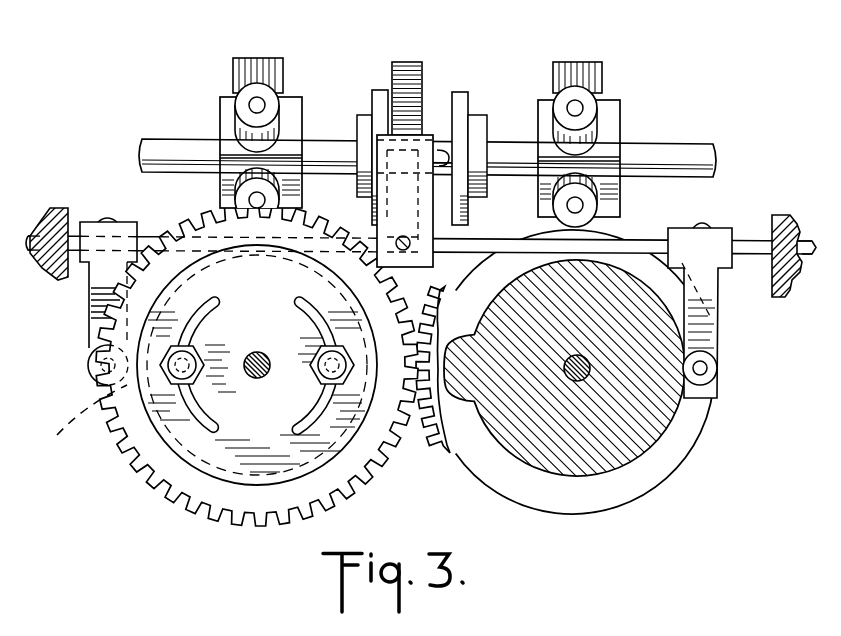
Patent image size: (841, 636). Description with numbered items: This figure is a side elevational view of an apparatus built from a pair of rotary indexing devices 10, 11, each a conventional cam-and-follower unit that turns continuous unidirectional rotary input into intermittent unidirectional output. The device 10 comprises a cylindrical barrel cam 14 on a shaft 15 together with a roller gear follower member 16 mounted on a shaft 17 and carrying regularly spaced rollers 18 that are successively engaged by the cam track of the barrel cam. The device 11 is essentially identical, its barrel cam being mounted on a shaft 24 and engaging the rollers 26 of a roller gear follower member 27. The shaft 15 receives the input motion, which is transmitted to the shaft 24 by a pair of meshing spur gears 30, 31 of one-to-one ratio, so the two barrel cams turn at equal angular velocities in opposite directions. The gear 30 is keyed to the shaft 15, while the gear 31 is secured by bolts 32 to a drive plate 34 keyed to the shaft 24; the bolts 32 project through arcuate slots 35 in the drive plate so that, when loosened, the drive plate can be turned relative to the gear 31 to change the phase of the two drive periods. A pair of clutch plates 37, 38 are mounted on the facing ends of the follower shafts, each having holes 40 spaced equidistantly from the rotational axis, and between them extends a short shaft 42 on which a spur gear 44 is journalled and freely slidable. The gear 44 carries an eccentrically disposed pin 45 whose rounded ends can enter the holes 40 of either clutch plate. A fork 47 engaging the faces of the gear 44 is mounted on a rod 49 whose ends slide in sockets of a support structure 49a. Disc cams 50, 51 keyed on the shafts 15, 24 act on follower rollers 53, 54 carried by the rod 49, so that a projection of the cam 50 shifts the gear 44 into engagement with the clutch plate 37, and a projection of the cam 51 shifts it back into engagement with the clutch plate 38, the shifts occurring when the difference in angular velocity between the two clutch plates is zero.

The rotary indexing device 10 is at (567, 385).
The rotary indexing device 11 is at (247, 365).
The cylindrical barrel cam 14 is at (652, 473).
The barrel cam shaft 15 is at (577, 378).
The roller gear follower member 16 is at (621, 126).
The follower member shaft 17 is at (684, 151).
The rollers 18 is at (597, 122).
The barrel cam shaft 24 is at (255, 374).
The rollers 26 is at (285, 125).
The roller gear follower member 27 is at (221, 114).
The spur gear 30 is at (437, 428).
The spur gear 31 is at (137, 440).
The bolts 32 is at (197, 348).
The drive plate 34 is at (225, 458).
The arcuate slots 35 is at (298, 305).
The clutch plate 37 is at (466, 99).
The clutch plate 38 is at (380, 90).
The holes 40 is at (458, 148).
The short shaft 42 is at (440, 140).
The spur gear 44 is at (405, 62).
The eccentrically disposed pin 45 is at (440, 163).
The fork 47 is at (405, 220).
The rod 49 is at (651, 240).
The support structure 49a is at (52, 207).
The disc cam 50 is at (596, 462).
The disc cam 51 is at (88, 420).
The follower roller 53 is at (710, 372).
The follower roller 54 is at (88, 363).